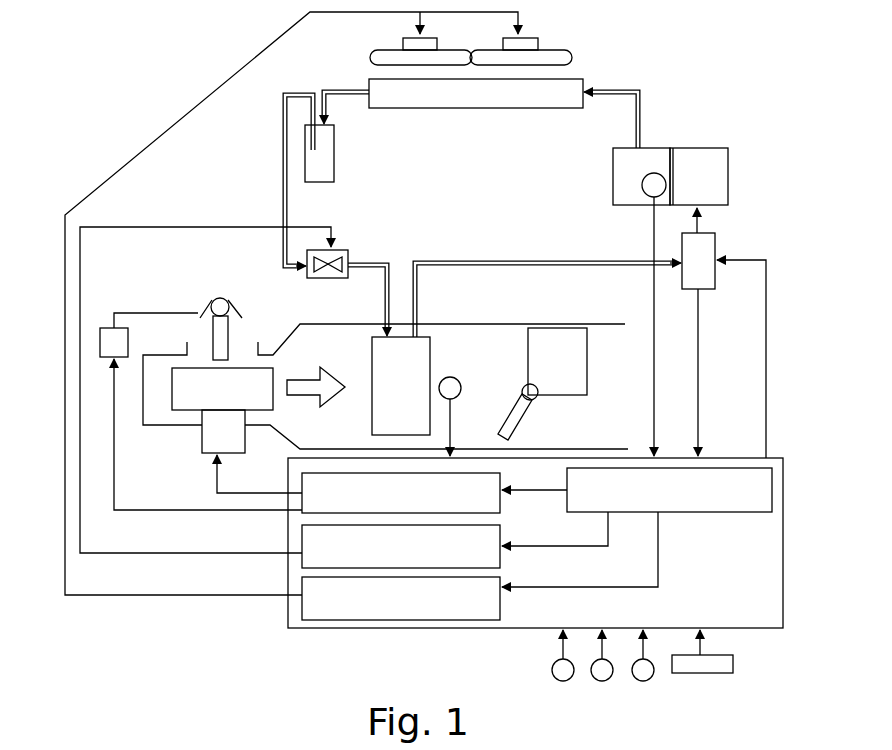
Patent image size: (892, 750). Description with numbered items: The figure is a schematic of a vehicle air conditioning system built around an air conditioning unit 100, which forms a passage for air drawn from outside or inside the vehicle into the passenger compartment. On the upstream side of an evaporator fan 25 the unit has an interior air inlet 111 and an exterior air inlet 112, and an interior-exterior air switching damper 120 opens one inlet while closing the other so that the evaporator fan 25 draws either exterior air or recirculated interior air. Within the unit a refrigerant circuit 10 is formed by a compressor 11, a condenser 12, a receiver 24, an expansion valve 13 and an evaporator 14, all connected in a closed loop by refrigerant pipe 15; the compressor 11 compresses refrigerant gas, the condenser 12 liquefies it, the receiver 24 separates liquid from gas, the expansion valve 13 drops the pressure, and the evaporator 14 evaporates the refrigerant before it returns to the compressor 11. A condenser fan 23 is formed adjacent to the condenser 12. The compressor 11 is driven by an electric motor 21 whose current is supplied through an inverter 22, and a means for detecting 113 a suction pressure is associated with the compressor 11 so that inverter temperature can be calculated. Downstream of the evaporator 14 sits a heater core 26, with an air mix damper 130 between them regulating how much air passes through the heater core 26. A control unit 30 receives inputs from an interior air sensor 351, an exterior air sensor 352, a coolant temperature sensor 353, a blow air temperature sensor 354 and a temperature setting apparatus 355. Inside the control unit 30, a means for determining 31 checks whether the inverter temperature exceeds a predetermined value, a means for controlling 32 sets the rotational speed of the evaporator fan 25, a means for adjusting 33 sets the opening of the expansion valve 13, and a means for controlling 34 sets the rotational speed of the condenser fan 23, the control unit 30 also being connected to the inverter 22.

The refrigerant circuit 10 is at (262, 170).
The compressor 11 is at (612, 165).
The condenser 12 is at (476, 97).
The expansion valve 13 is at (347, 252).
The evaporator 14 is at (428, 353).
The refrigerant pipe 15 is at (530, 262).
The electric motor 21 is at (709, 150).
The inverter 22 is at (714, 242).
The condenser fan 23 is at (565, 47).
The receiver 24 is at (331, 168).
The evaporator fan 25 is at (182, 403).
The heater core 26 is at (582, 352).
The control unit 30 is at (783, 610).
The means for determining 31 is at (755, 512).
The means for controlling the rotational speed of evaporator fan 32 is at (497, 500).
The means for adjusting the size of an opening of expansion valve 33 is at (493, 558).
The means for controlling the rotational speed of condenser fan 34 is at (494, 606).
The air conditioning unit 100 is at (510, 321).
The interior air inlet 111 is at (246, 341).
The exterior air inlet 112 is at (198, 342).
The means for detecting a suction pressure 113 is at (639, 196).
The interior-exterior air switching damper 120 is at (223, 337).
The air mix damper 130 is at (520, 412).
The interior air sensor 351 is at (571, 680).
The exterior air sensor 352 is at (610, 680).
The coolant temperature sensor 353 is at (651, 680).
The blow air temperature sensor 354 is at (458, 380).
The temperature setting apparatus 355 is at (736, 668).